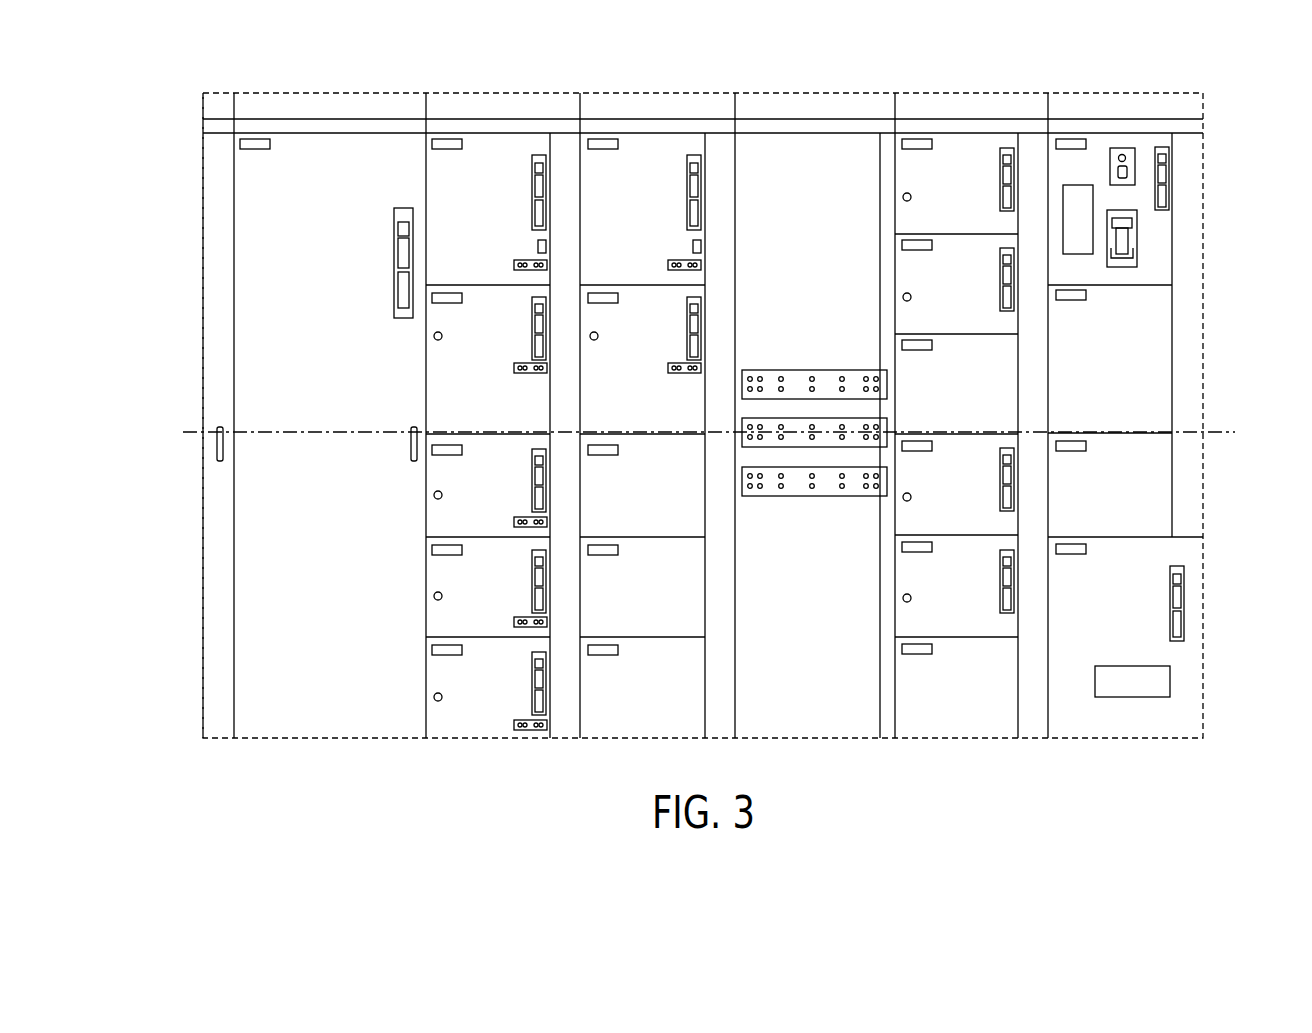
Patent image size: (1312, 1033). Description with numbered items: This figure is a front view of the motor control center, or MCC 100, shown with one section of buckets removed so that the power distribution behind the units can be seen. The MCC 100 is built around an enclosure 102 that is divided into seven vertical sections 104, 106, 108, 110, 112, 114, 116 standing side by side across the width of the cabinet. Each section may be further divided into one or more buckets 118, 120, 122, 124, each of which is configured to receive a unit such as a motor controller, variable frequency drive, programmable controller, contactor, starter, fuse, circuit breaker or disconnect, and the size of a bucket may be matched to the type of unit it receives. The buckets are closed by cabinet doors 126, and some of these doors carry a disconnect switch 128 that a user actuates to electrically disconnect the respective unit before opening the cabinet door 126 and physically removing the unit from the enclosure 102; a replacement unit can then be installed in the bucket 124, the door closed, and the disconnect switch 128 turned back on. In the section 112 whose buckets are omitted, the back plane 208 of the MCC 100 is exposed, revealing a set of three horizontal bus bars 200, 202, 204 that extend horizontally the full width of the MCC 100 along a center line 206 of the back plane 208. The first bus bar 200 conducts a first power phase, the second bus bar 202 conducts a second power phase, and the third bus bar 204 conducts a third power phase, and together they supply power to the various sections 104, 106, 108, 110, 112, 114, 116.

The MCC 100 is at (210, 263).
The enclosure 102 is at (205, 388).
The vertical section 104 is at (220, 102).
The vertical section 106 is at (327, 103).
The vertical section 108 is at (511, 103).
The vertical section 110 is at (665, 103).
The vertical section 112 is at (819, 103).
The vertical section 114 is at (971, 103).
The vertical section 116 is at (1128, 103).
The bucket 118 is at (1158, 247).
The bucket 120 is at (1158, 370).
The bucket 122 is at (1158, 498).
The bucket 124 is at (1183, 550).
The cabinet door 126 is at (1170, 680).
The disconnect switch 128 is at (1185, 600).
The first bus bar 200 is at (830, 378).
The second bus bar 202 is at (825, 425).
The third bus bar 204 is at (795, 487).
The center line 206 is at (328, 432).
The back plane 208 is at (826, 238).